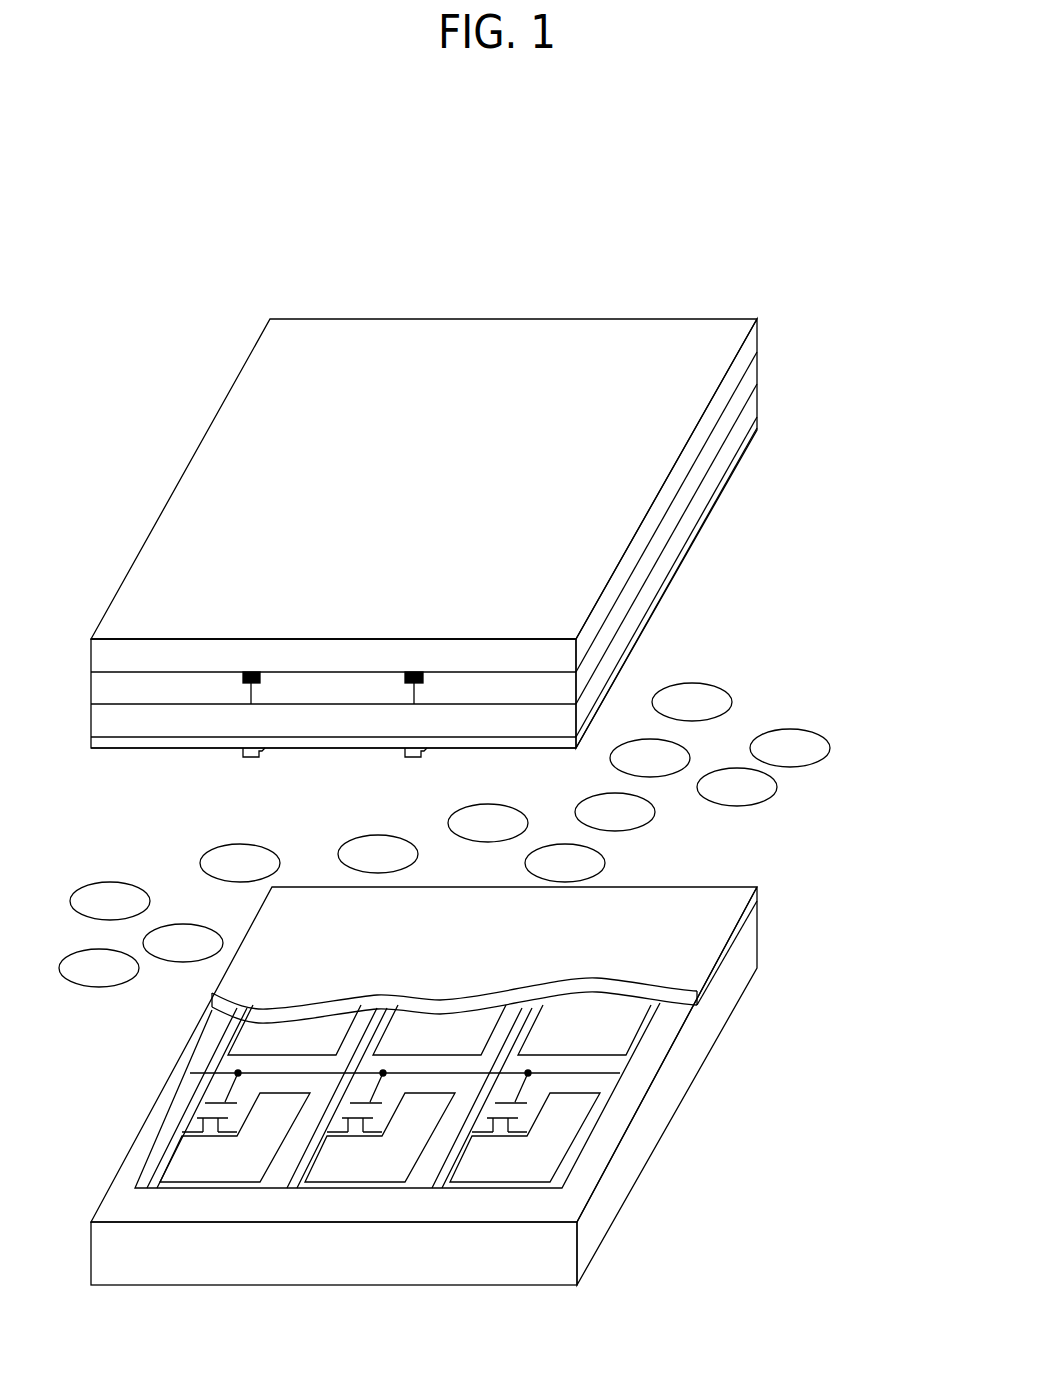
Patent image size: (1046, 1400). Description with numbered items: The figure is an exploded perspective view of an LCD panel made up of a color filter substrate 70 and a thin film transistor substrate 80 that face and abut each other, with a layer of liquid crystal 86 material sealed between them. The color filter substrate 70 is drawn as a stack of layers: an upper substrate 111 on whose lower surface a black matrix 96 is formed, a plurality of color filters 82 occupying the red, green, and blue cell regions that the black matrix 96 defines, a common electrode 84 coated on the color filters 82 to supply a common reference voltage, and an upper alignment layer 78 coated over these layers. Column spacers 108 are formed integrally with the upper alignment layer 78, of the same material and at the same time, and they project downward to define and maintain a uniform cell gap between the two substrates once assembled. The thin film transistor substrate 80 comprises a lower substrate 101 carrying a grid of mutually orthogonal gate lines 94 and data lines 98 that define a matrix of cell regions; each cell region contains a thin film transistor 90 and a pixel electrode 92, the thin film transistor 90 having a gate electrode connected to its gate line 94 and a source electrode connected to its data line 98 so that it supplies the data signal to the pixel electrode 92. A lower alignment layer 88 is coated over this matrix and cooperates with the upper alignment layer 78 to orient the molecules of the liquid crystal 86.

The color filter substrate 70 is at (513, 564).
The upper substrate 111 is at (752, 344).
The color filters 82 is at (752, 376).
The common electrode 84 is at (752, 405).
The upper alignment layer 78 is at (752, 433).
The black matrix 96 is at (251, 672).
The column spacers 108 is at (250, 760).
The liquid crystal 86 is at (710, 698).
The thin film transistor substrate 80 is at (514, 1114).
The lower alignment layer 88 is at (752, 895).
The lower substrate 101 is at (745, 935).
The gate lines 94 is at (603, 1075).
The data lines 98 is at (433, 1180).
The pixel electrode 92 is at (518, 1173).
The thin film transistor 90 is at (515, 1123).